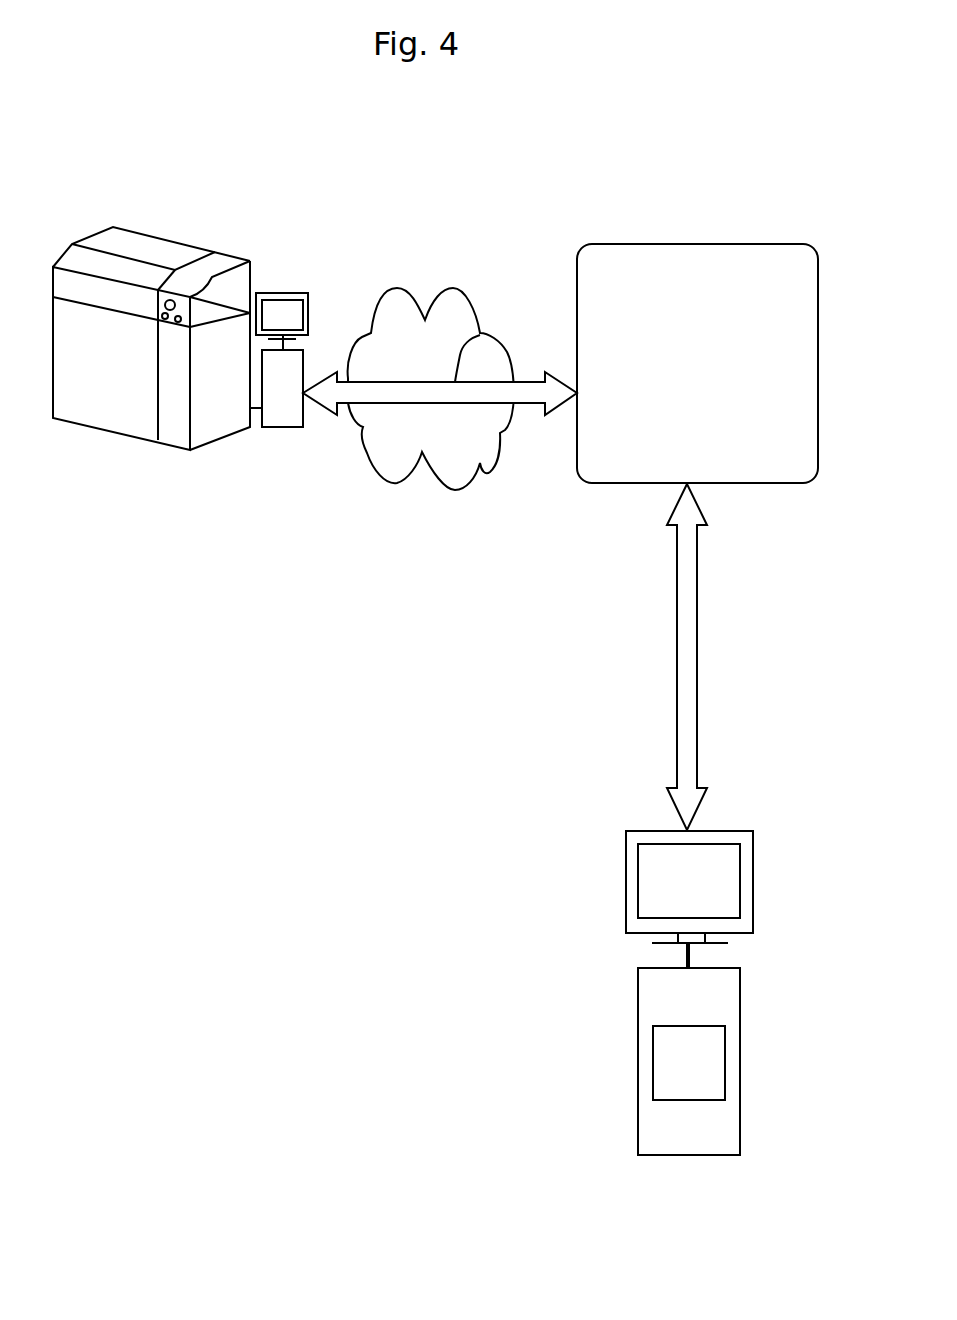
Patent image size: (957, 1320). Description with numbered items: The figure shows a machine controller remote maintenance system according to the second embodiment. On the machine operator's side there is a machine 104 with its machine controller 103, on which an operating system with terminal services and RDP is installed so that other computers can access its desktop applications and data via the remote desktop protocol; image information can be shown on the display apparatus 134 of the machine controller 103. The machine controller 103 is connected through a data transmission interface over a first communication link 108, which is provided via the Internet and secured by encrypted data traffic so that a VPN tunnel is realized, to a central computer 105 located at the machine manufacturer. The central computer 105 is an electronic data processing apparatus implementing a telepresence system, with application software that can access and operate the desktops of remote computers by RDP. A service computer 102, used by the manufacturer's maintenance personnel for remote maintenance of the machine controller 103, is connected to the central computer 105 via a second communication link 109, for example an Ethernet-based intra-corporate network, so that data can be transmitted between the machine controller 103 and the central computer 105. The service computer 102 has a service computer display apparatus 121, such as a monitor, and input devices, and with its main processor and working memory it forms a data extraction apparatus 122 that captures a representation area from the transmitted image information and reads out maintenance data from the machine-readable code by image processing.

The machine 104 is at (177, 226).
The machine controller 103 is at (303, 362).
The display apparatus 134 is at (284, 293).
The first communication link 108 is at (483, 333).
The central computer 105 is at (697, 244).
The second communication link 109 is at (692, 720).
The service computer 102 is at (750, 990).
The service computer display apparatus 121 is at (723, 867).
The data extraction apparatus 122 is at (713, 1073).